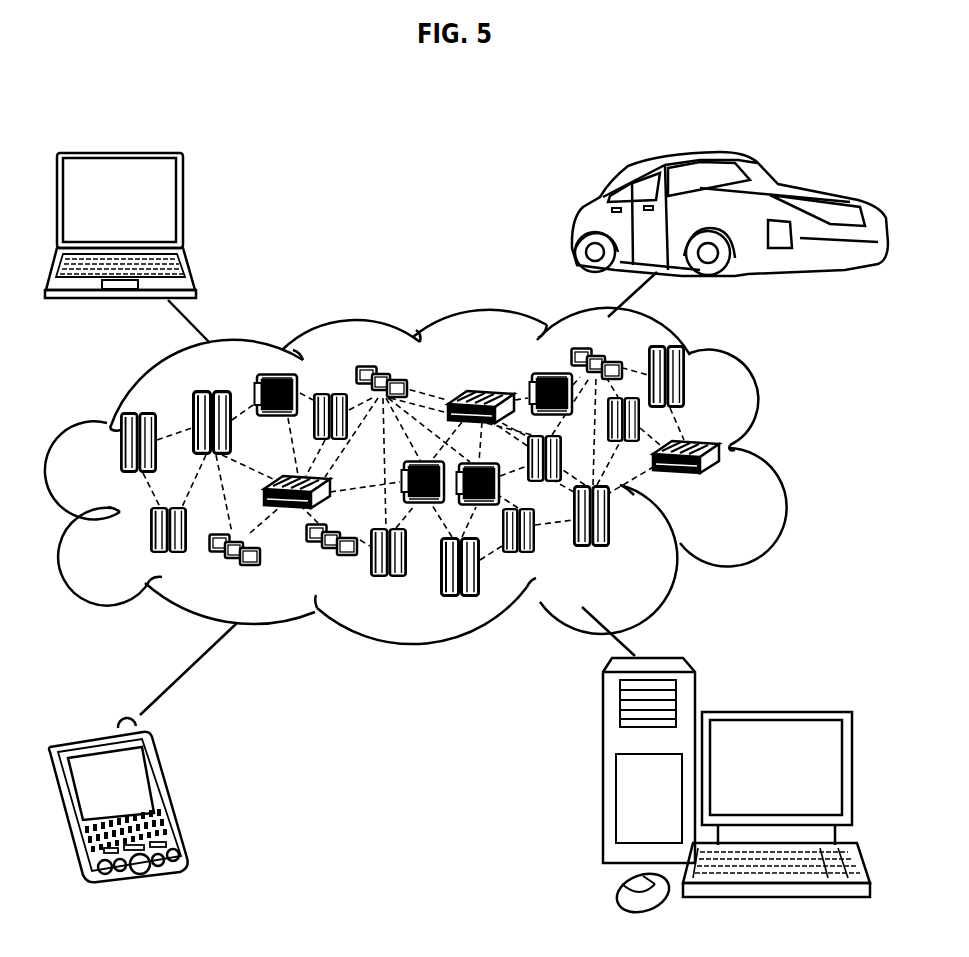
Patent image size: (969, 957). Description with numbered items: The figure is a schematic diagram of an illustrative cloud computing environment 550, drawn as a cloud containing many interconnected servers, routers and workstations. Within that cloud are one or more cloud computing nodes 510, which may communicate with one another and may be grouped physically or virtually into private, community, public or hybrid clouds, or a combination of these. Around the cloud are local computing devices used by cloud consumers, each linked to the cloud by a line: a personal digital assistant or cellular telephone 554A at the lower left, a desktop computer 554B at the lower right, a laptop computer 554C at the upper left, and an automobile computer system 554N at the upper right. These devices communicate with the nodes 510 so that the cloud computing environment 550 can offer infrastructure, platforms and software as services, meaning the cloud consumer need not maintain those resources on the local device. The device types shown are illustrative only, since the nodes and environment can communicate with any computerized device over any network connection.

The laptop computer 554C is at (183, 208).
The automobile computer system 554N is at (574, 222).
The personal digital assistant (PDA) or cellular telephone 554A is at (173, 798).
The desktop computer 554B is at (772, 712).
The cloud computing environment 550 is at (770, 450).
The cloud computing nodes 510 is at (732, 484).